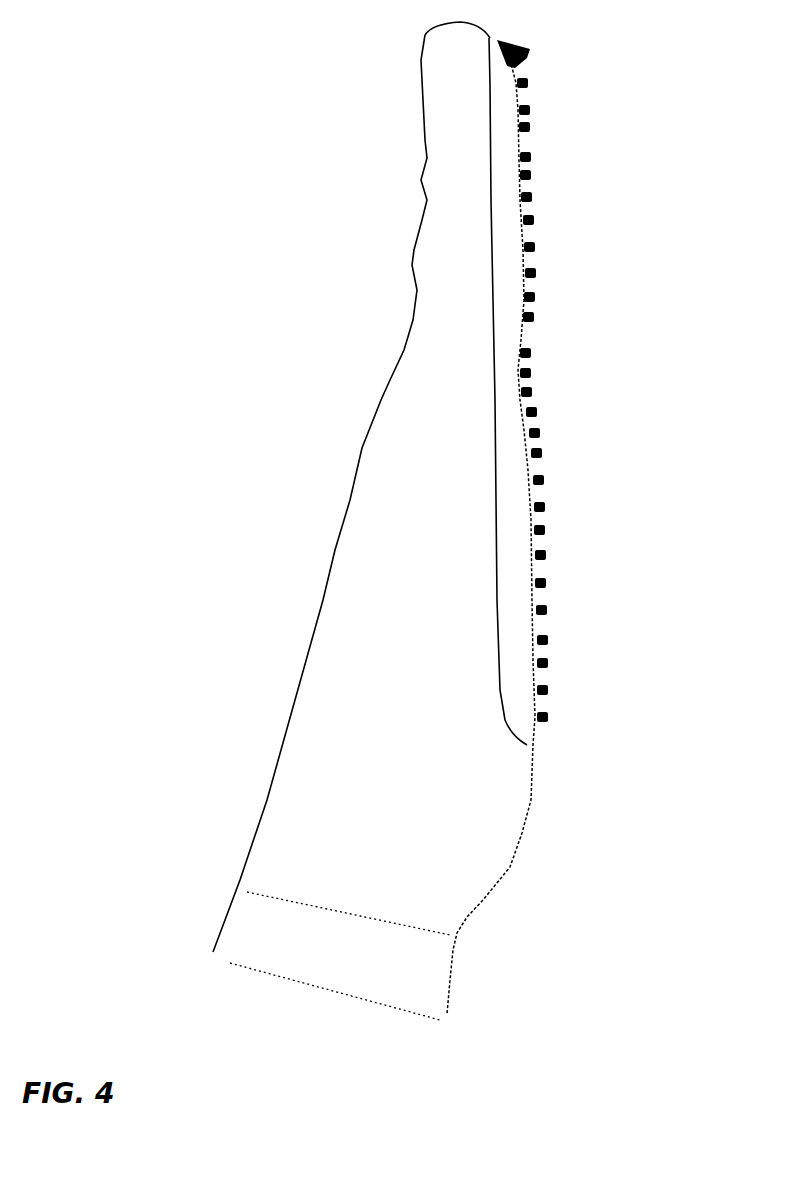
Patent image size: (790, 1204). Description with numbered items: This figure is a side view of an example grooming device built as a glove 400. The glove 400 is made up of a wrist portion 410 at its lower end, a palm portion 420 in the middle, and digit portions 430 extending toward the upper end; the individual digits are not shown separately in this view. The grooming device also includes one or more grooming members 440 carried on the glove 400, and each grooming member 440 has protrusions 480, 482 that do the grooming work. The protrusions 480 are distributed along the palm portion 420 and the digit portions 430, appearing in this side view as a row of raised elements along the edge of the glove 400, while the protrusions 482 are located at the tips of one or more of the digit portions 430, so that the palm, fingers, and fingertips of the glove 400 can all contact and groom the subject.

The glove 400 is at (362, 447).
The wrist portion 410 is at (413, 985).
The palm portion 420 is at (512, 784).
The digit portions 430 is at (427, 36).
The grooming member 440 is at (508, 641).
The protrusions 480 is at (540, 480).
The protrusions 482 is at (529, 52).